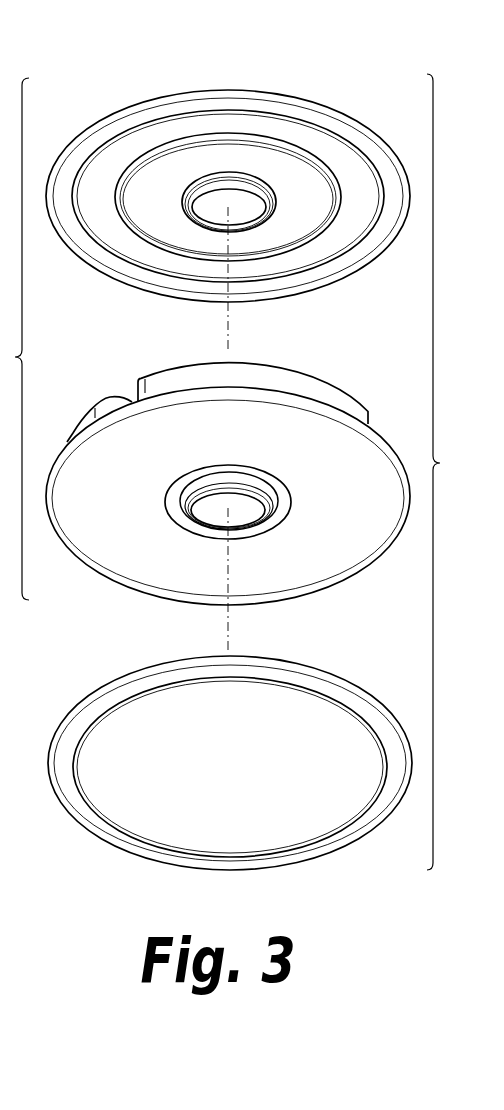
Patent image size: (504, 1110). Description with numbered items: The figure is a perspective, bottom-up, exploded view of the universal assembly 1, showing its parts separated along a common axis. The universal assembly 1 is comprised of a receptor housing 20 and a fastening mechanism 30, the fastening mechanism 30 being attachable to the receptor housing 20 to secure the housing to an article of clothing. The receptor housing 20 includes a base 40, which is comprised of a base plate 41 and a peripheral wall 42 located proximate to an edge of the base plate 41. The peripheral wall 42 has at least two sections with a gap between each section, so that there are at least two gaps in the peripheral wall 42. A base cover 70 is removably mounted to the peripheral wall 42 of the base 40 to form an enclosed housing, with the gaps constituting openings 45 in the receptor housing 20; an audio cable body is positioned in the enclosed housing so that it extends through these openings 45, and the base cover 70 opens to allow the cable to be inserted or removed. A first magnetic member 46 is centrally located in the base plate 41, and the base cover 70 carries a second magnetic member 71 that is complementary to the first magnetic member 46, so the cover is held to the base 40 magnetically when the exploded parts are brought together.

The universal assembly 1 is at (439, 472).
The receptor housing 20 is at (14, 339).
The fastening mechanism 30 is at (127, 852).
The base 40 is at (158, 339).
The base plate 41 is at (125, 583).
The peripheral wall 42 is at (320, 378).
The openings 45 is at (132, 400).
The first magnetic member 46 is at (245, 510).
The base cover 70 is at (243, 88).
The second magnetic member 71 is at (245, 212).